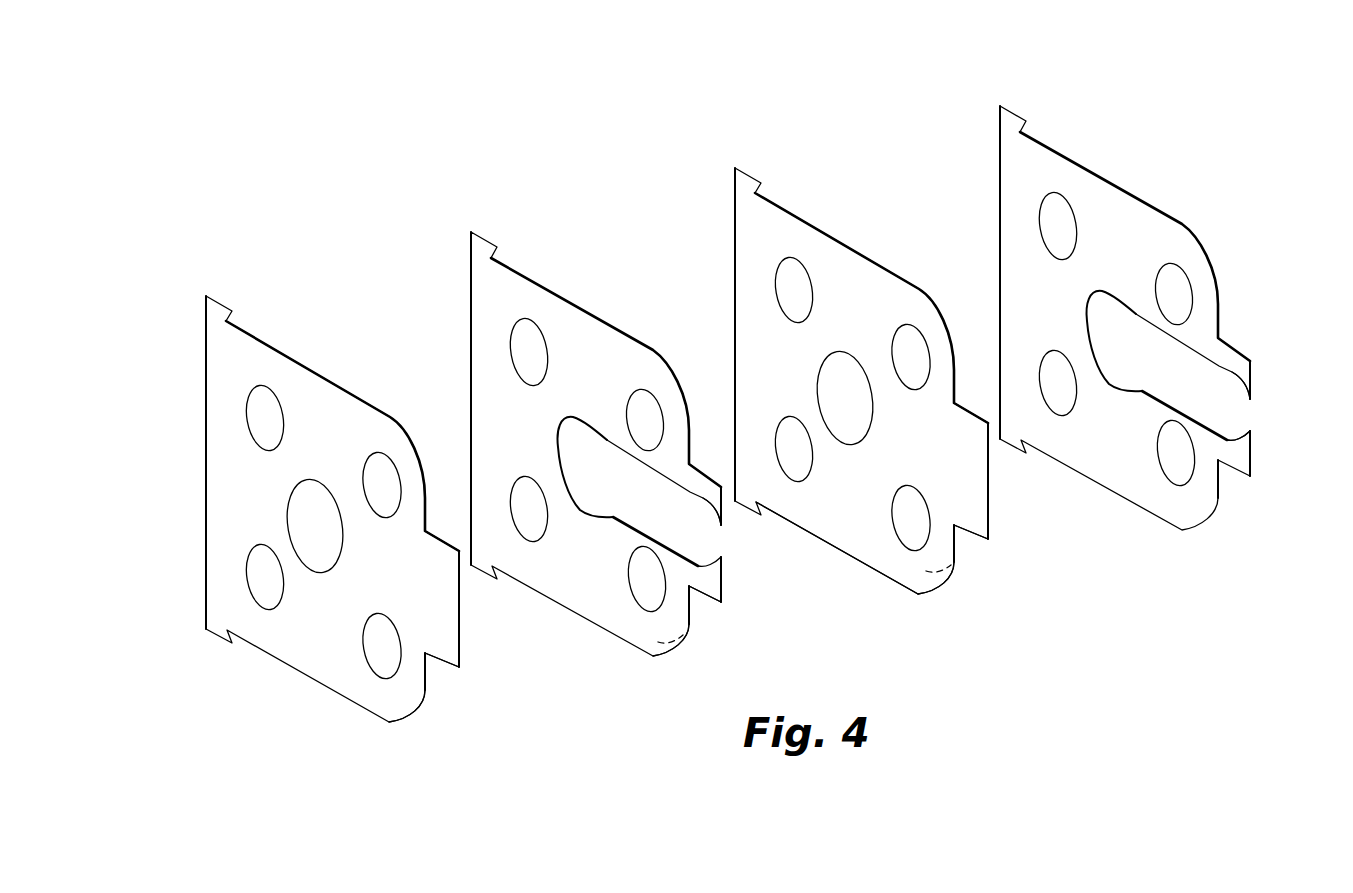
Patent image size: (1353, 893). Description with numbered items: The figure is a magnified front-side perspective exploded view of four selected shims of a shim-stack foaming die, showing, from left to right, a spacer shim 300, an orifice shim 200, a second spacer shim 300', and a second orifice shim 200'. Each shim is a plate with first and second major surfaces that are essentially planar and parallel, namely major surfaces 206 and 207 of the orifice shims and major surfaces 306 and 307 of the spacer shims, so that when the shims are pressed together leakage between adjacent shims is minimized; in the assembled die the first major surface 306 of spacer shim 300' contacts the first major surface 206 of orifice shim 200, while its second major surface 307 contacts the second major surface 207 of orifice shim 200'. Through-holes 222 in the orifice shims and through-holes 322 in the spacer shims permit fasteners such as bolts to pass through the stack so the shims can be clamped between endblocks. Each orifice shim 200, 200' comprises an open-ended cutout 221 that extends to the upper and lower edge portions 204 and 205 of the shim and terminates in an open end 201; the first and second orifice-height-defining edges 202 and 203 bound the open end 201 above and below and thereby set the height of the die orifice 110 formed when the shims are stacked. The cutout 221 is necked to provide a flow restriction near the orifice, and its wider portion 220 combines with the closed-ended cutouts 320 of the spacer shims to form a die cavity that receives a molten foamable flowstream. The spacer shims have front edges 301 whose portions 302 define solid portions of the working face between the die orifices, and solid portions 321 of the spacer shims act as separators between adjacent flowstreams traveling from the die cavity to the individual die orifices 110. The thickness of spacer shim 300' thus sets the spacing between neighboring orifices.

The spacer shim 300 is at (332, 458).
The spacer shim 300' is at (861, 342).
The orifice shim 200 is at (596, 400).
The second orifice shim 200' is at (1125, 282).
The through-hole 322 is at (263, 398).
The solid portion 321 is at (401, 581).
The front edge 301 is at (452, 638).
The through-hole 222 is at (522, 342).
The portion of cutout 220 is at (578, 483).
The open-ended cutout 221 is at (650, 526).
The first orifice-height-defining edge 202 is at (718, 542).
The die orifice 110 is at (722, 526).
The second orifice-height-defining edge 203 is at (728, 558).
The first major surface 206 is at (692, 637).
The second major surface 207 is at (633, 630).
The closed-ended cutout 320 is at (840, 368).
The portion of front edge 302 is at (988, 488).
The first major surface 306 is at (890, 563).
The second major surface 307 is at (953, 565).
The upper edge portion 204 is at (1256, 382).
The open end 201 is at (1243, 421).
The lower edge portion 205 is at (1255, 458).